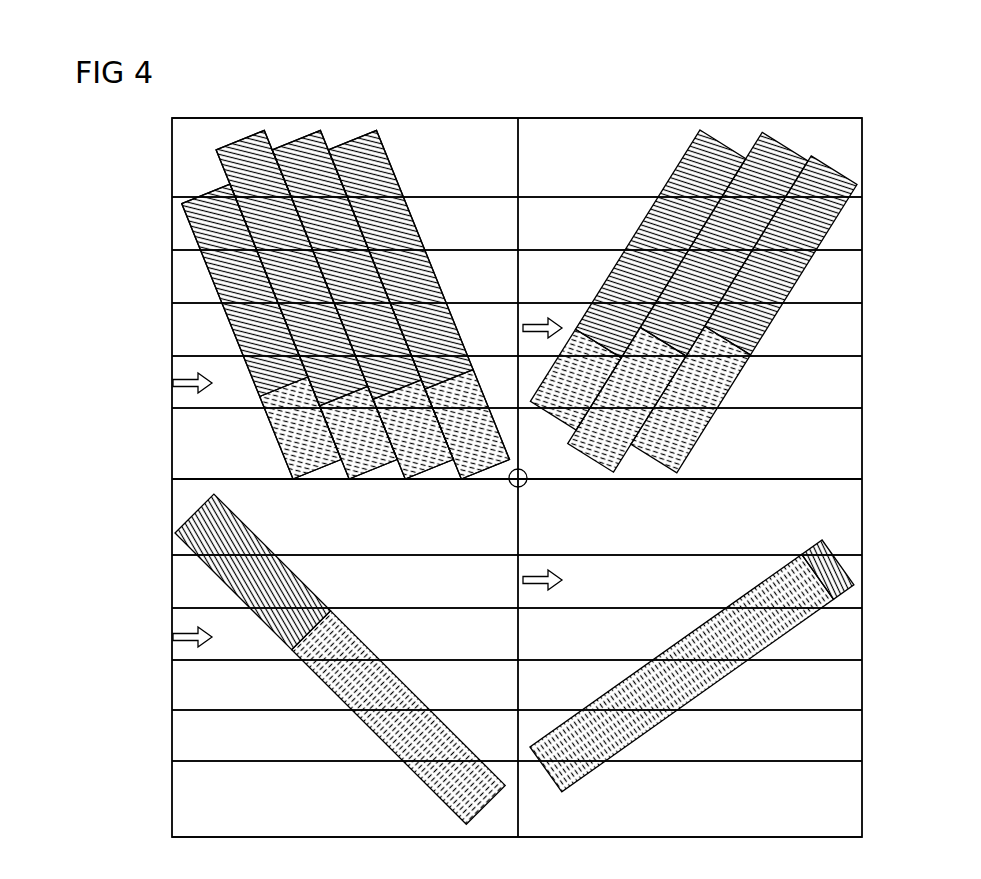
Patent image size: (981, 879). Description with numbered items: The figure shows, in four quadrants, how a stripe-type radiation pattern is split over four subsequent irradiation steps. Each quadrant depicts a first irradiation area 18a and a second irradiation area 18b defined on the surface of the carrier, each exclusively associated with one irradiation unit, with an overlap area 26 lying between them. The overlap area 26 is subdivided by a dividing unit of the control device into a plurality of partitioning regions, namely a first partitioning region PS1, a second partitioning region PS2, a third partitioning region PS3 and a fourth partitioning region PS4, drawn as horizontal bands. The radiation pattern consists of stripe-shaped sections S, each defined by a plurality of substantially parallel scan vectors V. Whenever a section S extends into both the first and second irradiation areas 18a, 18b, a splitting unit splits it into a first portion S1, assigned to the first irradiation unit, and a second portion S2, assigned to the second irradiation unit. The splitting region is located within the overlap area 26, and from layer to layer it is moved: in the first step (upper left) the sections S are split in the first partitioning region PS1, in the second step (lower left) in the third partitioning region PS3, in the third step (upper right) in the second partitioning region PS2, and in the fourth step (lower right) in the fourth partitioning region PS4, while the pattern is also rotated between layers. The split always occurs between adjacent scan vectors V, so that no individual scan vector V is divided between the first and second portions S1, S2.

The overlap area 26 is at (150, 351).
The first irradiation area 18a is at (172, 159).
The second irradiation area 18b is at (172, 451).
The first partitioning region PS1 is at (172, 399).
The second partitioning region PS2 is at (172, 329).
The third partitioning region PS3 is at (172, 282).
The fourth partitioning region PS4 is at (172, 217).
The scan vectors V is at (172, 250).
The section of radiation pattern S is at (355, 142).
The first portion S1 is at (403, 162).
The second portion S2 is at (488, 390).